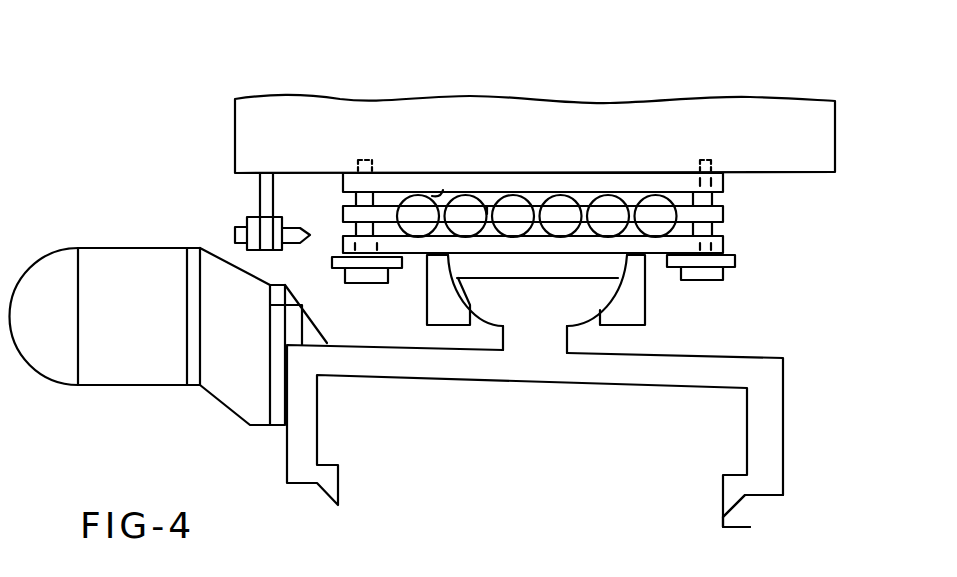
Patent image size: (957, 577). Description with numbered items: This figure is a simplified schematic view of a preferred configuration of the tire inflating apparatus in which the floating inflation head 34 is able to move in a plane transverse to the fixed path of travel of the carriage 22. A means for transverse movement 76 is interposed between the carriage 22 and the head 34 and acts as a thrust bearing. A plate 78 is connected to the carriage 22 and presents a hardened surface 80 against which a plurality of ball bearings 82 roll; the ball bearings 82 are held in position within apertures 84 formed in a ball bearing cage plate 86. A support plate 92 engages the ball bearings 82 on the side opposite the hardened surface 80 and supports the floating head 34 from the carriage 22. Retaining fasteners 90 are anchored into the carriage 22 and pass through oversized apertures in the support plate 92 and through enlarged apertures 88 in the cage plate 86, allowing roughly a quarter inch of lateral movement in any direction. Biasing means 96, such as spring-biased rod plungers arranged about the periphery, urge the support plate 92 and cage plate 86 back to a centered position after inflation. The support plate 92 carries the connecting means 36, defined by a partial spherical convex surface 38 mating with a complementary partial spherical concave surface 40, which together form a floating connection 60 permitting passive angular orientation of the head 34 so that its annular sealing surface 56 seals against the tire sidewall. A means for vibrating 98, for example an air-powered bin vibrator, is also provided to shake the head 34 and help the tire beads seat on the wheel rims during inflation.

The carriage 22 is at (560, 110).
The floating inflation head 34 is at (830, 342).
The connecting means 36 is at (663, 307).
The partial spherical convex surface 38 is at (490, 318).
The partial spherical concave surface 40 is at (450, 263).
The annular sealing surface 56 is at (750, 527).
The floating connection 60 is at (582, 338).
The means for transverse movement 76 is at (768, 195).
The plate 78 is at (725, 188).
The hardened surface 80 is at (443, 190).
The ball bearings 82 is at (518, 195).
The apertures 84 is at (487, 206).
The ball bearing cage plate 86 is at (722, 215).
The enlarged apertures 88 is at (385, 213).
The retaining fasteners 90 is at (357, 199).
The support plate 92 is at (722, 245).
The biasing means 96 is at (296, 219).
The means for vibrating 98 is at (130, 243).